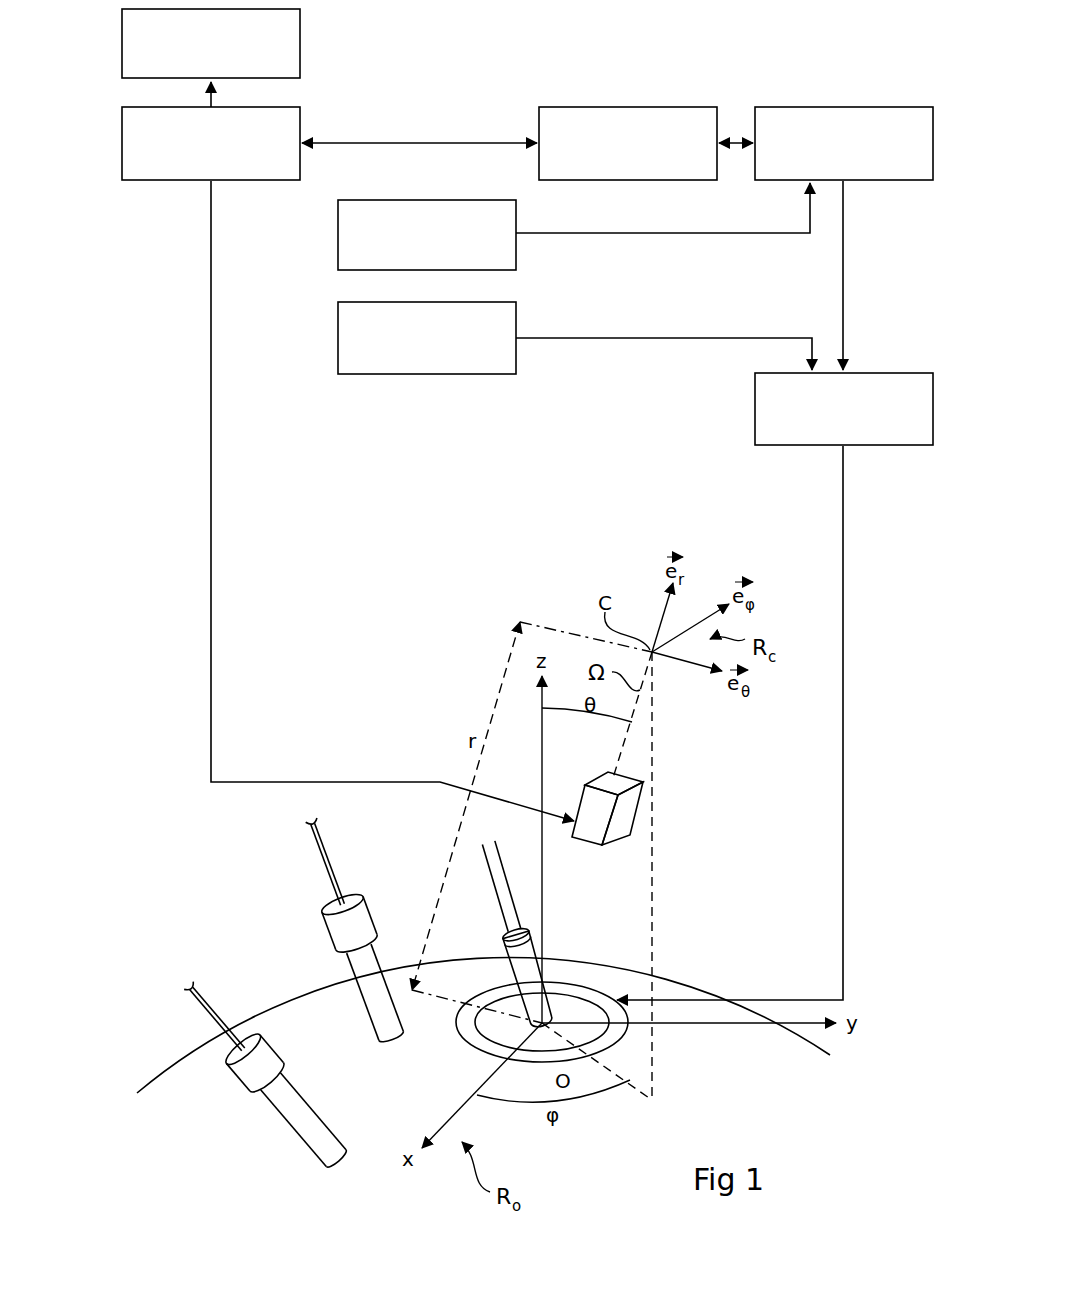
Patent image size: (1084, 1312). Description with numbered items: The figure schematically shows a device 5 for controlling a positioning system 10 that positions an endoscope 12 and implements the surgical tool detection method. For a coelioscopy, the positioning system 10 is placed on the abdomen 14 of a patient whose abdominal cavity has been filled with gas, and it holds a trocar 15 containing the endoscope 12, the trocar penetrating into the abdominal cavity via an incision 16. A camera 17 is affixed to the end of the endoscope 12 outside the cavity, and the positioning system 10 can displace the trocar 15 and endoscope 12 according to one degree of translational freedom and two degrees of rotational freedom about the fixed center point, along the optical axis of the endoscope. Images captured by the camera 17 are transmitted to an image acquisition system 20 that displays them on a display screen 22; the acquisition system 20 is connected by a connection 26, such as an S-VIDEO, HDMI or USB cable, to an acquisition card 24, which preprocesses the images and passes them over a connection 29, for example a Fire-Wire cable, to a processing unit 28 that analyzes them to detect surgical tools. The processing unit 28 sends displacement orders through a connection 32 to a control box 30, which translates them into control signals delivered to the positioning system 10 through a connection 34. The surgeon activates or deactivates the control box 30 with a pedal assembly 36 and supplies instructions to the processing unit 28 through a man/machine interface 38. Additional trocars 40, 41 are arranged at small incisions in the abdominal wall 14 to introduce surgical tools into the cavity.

The device 5 is at (520, 60).
The positioning system 10 is at (472, 1050).
The endoscope 12 is at (590, 882).
The abdomen 14 is at (150, 1090).
The trocar 15 is at (563, 950).
The incision 16 is at (478, 1040).
The camera 17 is at (626, 813).
The image acquisition system 20 is at (152, 181).
The display screen 22 is at (302, 30).
The acquisition card 24 is at (620, 181).
The connection 26 is at (412, 140).
The processing unit 28 is at (823, 106).
The connection 29 is at (742, 140).
The control box 30 is at (755, 425).
The connection 32 is at (846, 283).
The connection 34 is at (845, 585).
The pedal assembly 36 is at (517, 358).
The man/machine interface 38 is at (517, 250).
The additional trocar 40 is at (263, 1073).
The additional trocar 41 is at (331, 929).